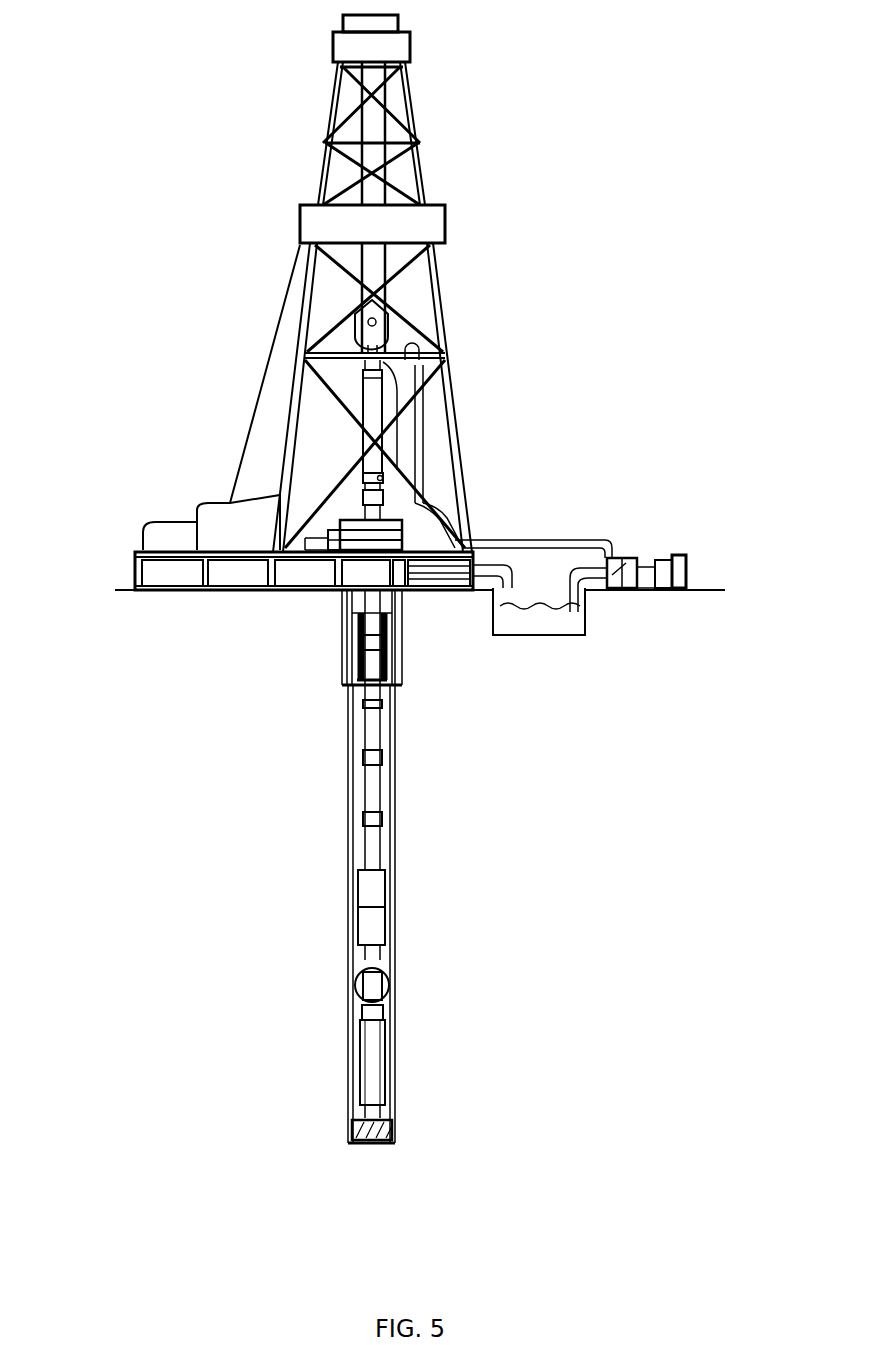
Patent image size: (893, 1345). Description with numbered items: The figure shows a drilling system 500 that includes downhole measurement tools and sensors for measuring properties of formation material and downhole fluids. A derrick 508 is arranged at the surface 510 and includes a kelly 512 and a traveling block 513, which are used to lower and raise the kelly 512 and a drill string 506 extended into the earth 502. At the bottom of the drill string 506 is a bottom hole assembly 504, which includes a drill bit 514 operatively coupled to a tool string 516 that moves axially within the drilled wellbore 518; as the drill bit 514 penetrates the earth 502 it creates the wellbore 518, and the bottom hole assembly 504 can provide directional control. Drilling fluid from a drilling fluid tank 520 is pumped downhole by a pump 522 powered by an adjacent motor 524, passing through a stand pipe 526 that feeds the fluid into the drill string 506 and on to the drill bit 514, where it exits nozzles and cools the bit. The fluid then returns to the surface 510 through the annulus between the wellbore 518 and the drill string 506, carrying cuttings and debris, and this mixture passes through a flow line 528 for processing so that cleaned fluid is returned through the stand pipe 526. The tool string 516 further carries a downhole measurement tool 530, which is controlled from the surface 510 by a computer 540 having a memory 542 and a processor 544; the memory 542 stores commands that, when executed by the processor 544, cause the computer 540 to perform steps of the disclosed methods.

The drilling system 500 is at (577, 213).
The earth 502 is at (166, 656).
The bottom hole assembly 504 is at (258, 975).
The drill string 506 is at (378, 775).
The derrick 508 is at (306, 328).
The surface 510 is at (128, 588).
The kelly 512 is at (362, 393).
The traveling block 513 is at (392, 322).
The drill bit 514 is at (393, 1135).
The tool string 516 is at (375, 1050).
The wellbore 518 is at (343, 745).
The drilling fluid tank 520 is at (540, 635).
The pump 522 is at (625, 558).
The motor 524 is at (690, 568).
The stand pipe 526 is at (425, 437).
The flow line 528 is at (515, 568).
The downhole measurement tool 530 is at (392, 1002).
The computer 540 is at (165, 550).
The memory 542 is at (171, 577).
The processor 544 is at (236, 577).